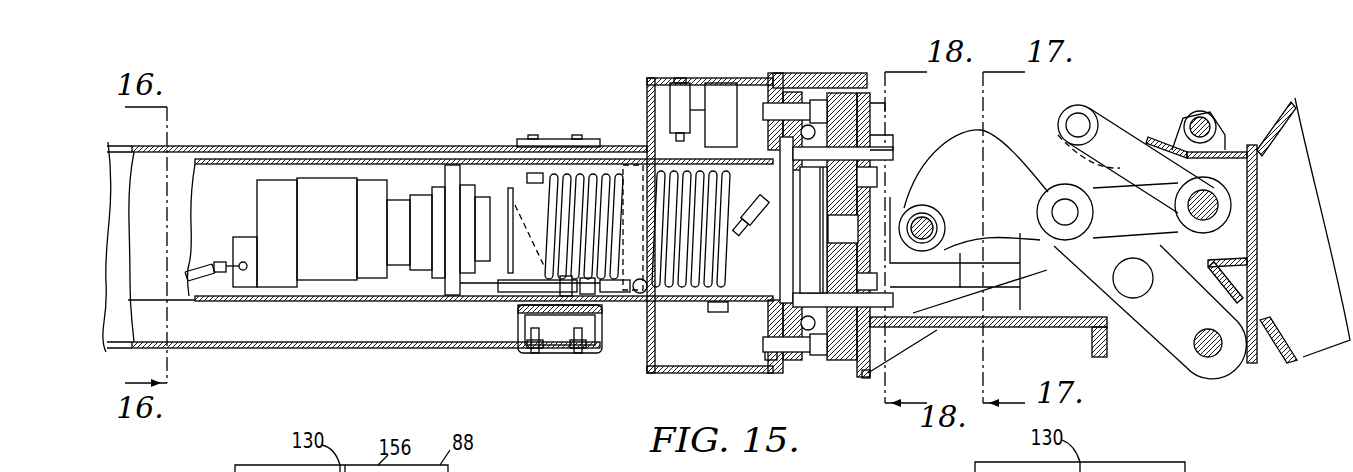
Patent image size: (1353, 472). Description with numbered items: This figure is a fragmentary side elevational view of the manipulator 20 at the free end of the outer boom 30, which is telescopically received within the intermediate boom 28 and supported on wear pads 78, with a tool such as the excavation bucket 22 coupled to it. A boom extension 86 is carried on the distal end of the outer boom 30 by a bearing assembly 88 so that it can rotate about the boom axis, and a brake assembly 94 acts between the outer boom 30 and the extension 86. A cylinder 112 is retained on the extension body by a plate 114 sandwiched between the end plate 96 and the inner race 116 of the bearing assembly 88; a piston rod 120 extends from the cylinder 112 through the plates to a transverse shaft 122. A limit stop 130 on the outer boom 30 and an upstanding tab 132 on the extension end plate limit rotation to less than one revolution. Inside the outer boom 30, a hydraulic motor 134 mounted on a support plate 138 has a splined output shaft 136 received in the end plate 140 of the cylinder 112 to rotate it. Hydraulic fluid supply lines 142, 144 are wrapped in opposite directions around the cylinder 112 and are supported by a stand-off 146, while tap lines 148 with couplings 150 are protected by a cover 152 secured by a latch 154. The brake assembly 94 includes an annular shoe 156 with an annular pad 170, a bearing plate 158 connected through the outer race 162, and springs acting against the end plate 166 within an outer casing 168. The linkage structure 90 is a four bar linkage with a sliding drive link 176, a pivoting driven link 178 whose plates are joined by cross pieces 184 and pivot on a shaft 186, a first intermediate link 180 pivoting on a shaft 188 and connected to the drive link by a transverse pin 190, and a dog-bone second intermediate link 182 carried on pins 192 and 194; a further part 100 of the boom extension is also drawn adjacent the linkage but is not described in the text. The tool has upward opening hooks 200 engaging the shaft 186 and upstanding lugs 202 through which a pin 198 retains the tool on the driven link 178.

The manipulator 20 is at (632, 369).
The excavation bucket 22 is at (1300, 148).
The intermediate boom 28 is at (300, 348).
The outer boom 30 is at (316, 301).
The wear pads 78 is at (520, 320).
The boom extension 86 is at (1100, 342).
The bearing assembly 88 is at (815, 378).
The linkage structure 90 is at (1093, 80).
The brake assembly 94 is at (840, 378).
The end plate 96 is at (873, 110).
The mounting plate 100 is at (1048, 330).
The cylinder 112 is at (511, 190).
The plate 114 is at (838, 205).
The inner race 116 is at (808, 290).
The rod 120 is at (920, 210).
The transverse shaft 122 is at (935, 225).
The limit stop 130 is at (866, 95).
The upstanding tab 132 is at (868, 380).
The hydraulic motor 134 is at (335, 192).
The output shaft 136 is at (416, 232).
The support plate 138 is at (452, 170).
The end plate 140 is at (475, 195).
The hydraulic fluid supply line 142 is at (605, 175).
The hydraulic fluid supply line 144 is at (672, 287).
The stand-off 146 is at (480, 292).
The tap lines 148 is at (535, 178).
The couplings 150 is at (722, 98).
The cover 152 is at (672, 90).
The latch 154 is at (668, 110).
The annular shoe 156 is at (845, 75).
The bearing plate 158 is at (718, 312).
The outer race 162 is at (778, 100).
The end plate 166 is at (770, 375).
The outer casing 168 is at (685, 375).
The annular pad 170 is at (888, 121).
The drive link 176 is at (962, 135).
The driven link 178 is at (1175, 118).
The first intermediate link 180 is at (1085, 285).
The second intermediate link 182 is at (1120, 140).
The cross pieces 184 is at (1160, 150).
The shaft 186 is at (1220, 350).
The shaft 188 is at (1130, 290).
The transverse pin 190 is at (1068, 216).
The pin 192 is at (1070, 118).
The pin 194 is at (1215, 205).
The pin 198 is at (1204, 120).
The hooks 200 is at (1200, 374).
The upstanding lugs 202 is at (1232, 138).